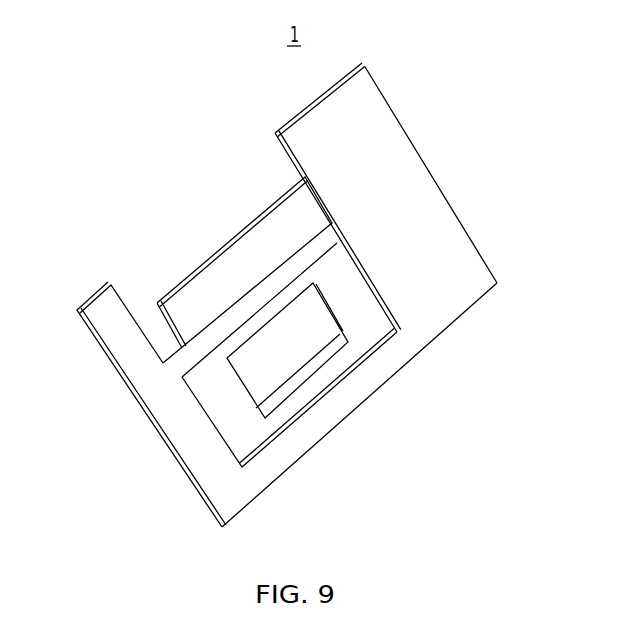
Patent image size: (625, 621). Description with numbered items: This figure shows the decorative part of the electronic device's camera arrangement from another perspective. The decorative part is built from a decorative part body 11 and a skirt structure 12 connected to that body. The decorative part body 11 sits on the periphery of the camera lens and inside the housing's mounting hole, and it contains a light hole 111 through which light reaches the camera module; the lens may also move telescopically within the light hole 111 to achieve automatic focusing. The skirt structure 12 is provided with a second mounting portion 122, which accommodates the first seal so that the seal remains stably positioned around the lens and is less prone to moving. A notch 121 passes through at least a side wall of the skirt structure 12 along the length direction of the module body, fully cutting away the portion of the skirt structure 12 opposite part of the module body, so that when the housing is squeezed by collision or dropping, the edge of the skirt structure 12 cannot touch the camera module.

The decorative part body 11 is at (278, 230).
The light hole 111 is at (300, 345).
The skirt structure 12 is at (433, 220).
The notch 121 is at (170, 248).
The second mounting portion 122 is at (242, 432).